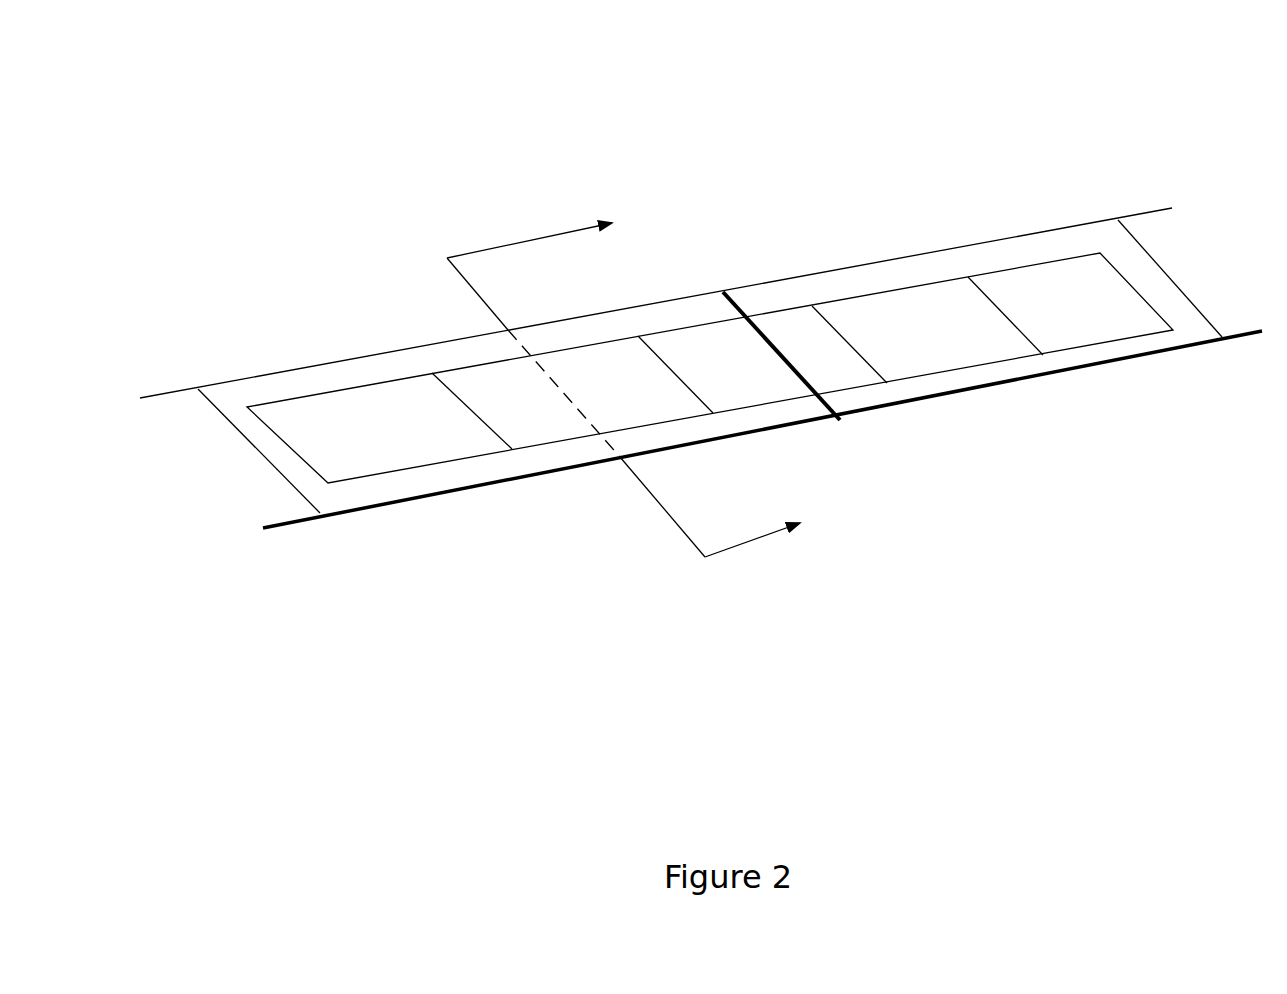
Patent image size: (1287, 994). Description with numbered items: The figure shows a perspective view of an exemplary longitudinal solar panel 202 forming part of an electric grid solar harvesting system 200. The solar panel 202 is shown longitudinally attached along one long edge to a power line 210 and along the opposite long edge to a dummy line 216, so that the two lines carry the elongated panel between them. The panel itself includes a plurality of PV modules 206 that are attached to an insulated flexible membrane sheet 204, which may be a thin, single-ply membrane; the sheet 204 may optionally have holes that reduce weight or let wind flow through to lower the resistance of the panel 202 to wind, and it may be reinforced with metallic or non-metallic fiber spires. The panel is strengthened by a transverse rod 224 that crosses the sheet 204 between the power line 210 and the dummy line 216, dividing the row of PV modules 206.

The electric grid solar harvesting system 200 is at (327, 125).
The longitudinal solar panel 202 is at (747, 130).
The insulated flexible membrane sheet 204 is at (778, 416).
The PV modules 206 is at (1078, 302).
The power line 210 is at (913, 402).
The dummy line 216 is at (885, 262).
The transverse rod 224 is at (742, 306).